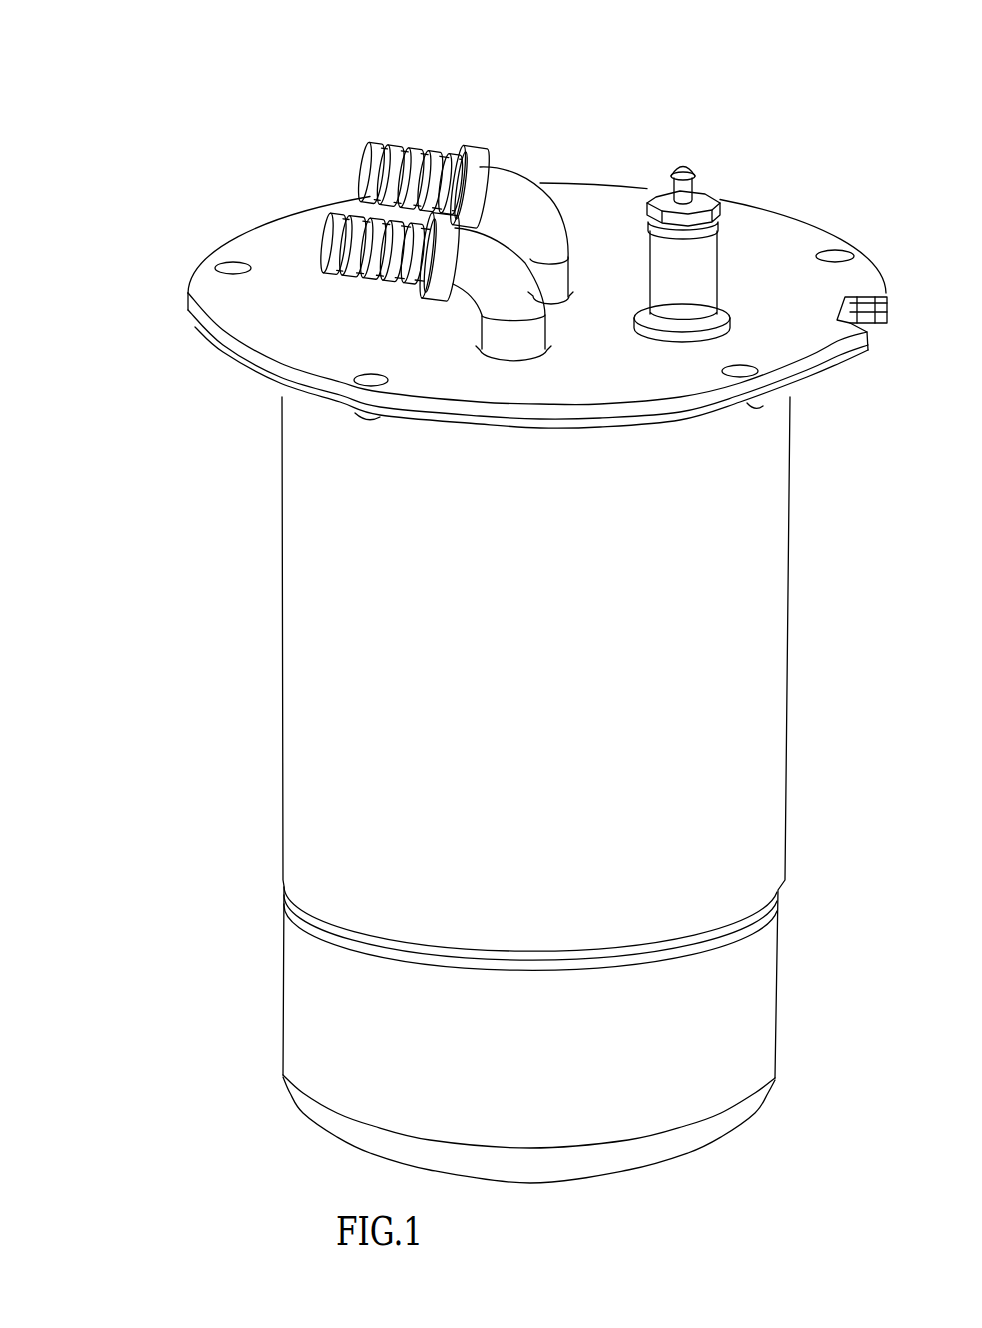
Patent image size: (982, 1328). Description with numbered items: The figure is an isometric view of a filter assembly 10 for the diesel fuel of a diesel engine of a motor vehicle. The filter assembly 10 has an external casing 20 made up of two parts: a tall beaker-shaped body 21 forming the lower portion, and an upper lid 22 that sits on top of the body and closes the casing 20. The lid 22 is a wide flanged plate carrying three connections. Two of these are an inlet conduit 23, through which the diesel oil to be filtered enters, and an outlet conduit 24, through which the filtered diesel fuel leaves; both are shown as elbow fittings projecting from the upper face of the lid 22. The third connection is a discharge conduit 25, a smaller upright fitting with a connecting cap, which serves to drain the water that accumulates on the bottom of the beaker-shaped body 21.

The filter assembly 10 is at (153, 211).
The external casing 20 is at (244, 369).
The beaker-shaped body 21 is at (360, 648).
The upper lid 22 is at (777, 247).
The inlet conduit 23 is at (485, 267).
The outlet conduit 24 is at (503, 193).
The discharge conduit 25 is at (693, 231).